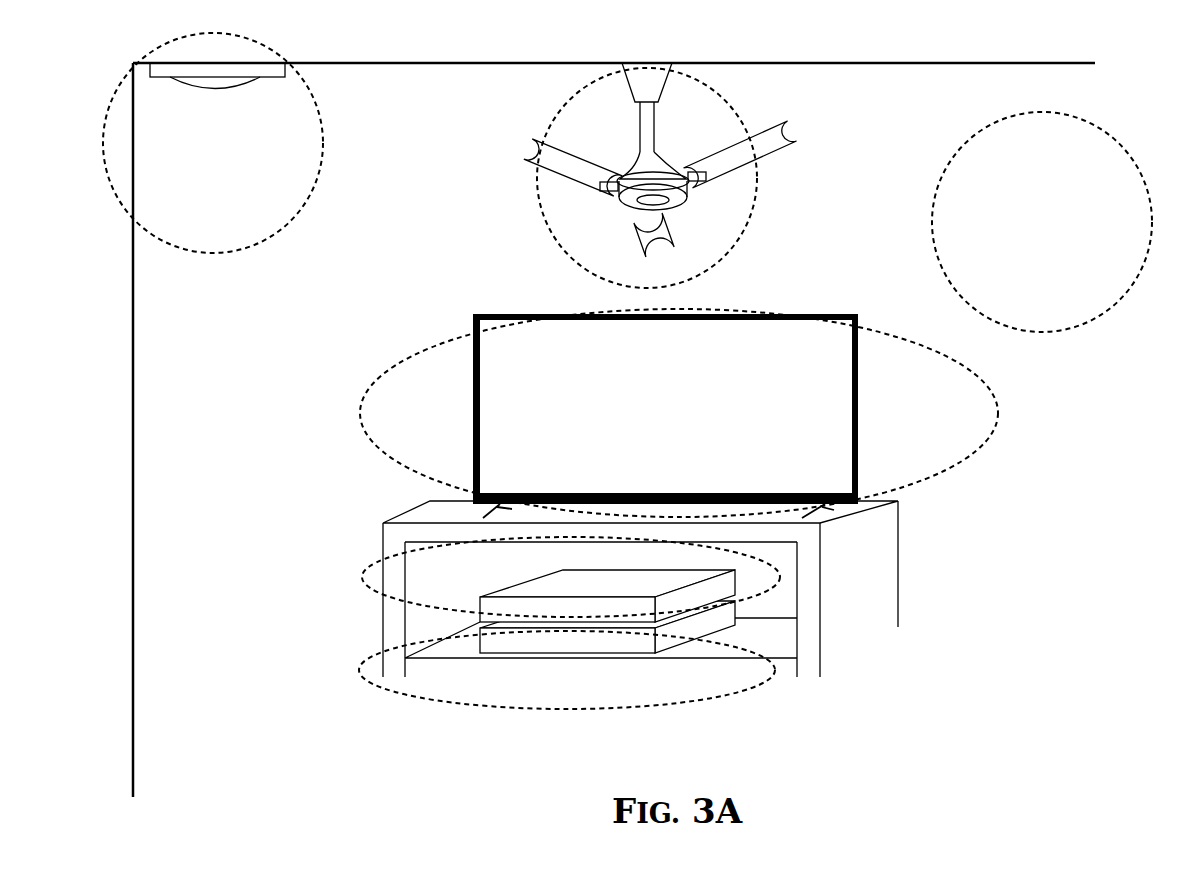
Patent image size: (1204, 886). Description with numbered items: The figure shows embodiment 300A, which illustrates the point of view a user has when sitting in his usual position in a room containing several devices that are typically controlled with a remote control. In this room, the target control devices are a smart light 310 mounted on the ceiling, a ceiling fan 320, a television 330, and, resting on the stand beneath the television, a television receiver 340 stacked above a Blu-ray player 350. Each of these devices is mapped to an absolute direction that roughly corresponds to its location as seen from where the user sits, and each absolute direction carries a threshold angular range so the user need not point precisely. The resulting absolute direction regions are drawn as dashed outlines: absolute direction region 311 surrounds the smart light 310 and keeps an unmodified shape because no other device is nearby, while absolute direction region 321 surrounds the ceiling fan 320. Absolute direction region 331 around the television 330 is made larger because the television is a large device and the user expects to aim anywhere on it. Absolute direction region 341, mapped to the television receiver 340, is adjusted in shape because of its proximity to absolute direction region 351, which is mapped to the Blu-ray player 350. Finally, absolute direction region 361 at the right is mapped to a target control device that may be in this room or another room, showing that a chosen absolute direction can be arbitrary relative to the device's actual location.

The embodiment 300A is at (1120, 94).
The smart light 310 is at (240, 88).
The absolute direction region 311 is at (268, 237).
The ceiling fan 320 is at (691, 192).
The absolute direction region 321 is at (740, 241).
The television 330 is at (857, 314).
The absolute direction region 331 is at (979, 445).
The television receiver 340 is at (481, 603).
The absolute direction region 341 is at (762, 597).
The Blu-ray player 350 is at (680, 649).
The absolute direction region 351 is at (743, 692).
The absolute direction region 361 is at (1104, 311).